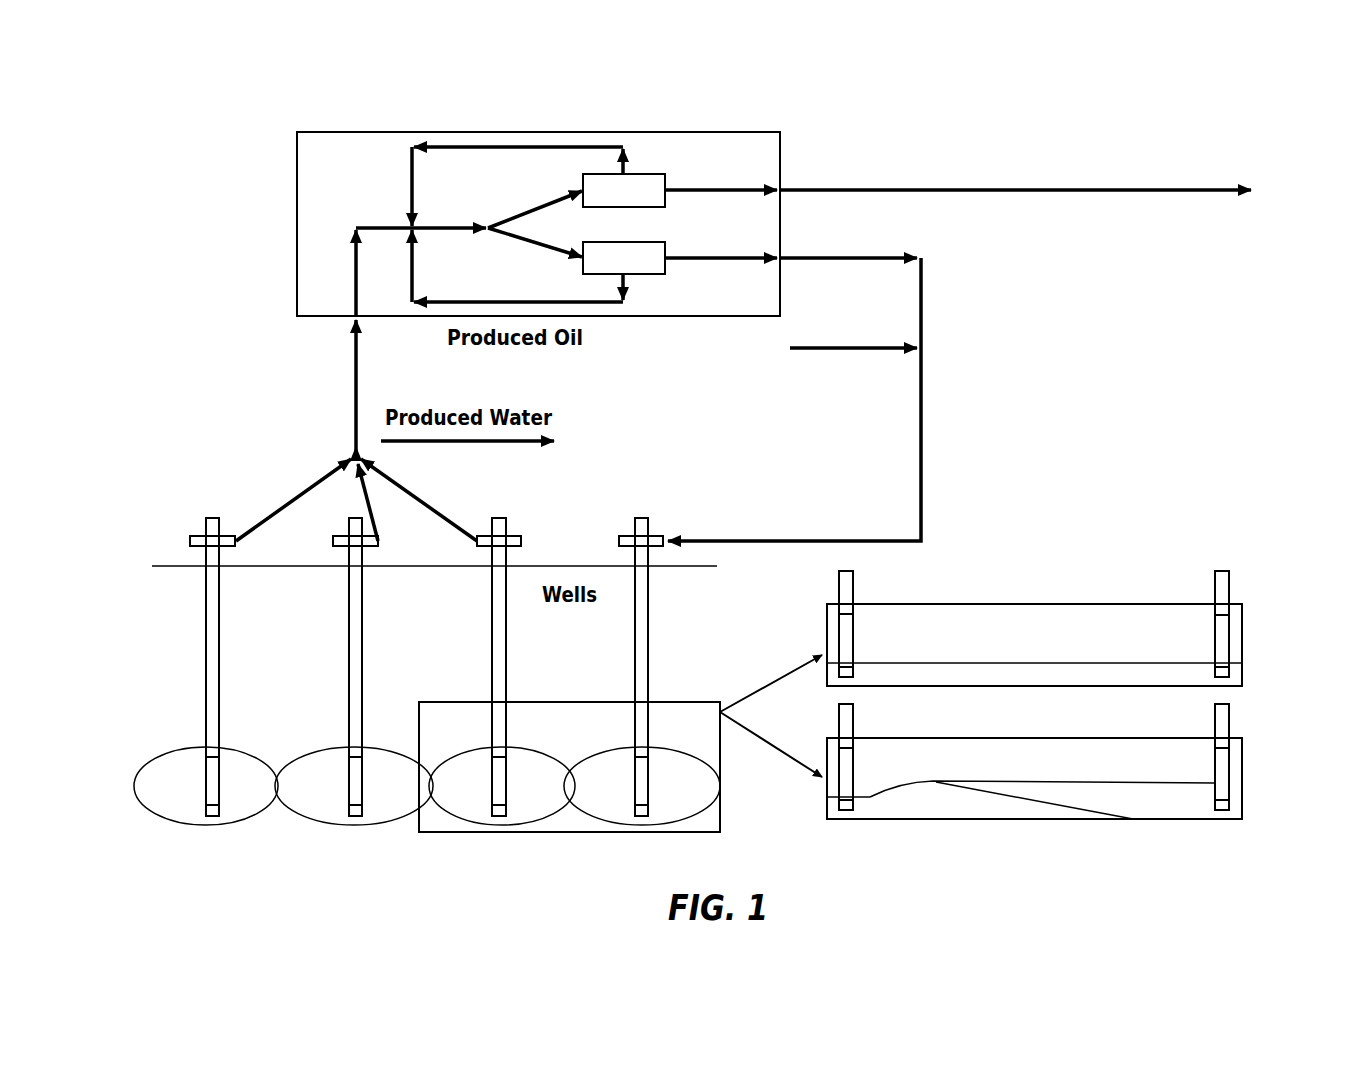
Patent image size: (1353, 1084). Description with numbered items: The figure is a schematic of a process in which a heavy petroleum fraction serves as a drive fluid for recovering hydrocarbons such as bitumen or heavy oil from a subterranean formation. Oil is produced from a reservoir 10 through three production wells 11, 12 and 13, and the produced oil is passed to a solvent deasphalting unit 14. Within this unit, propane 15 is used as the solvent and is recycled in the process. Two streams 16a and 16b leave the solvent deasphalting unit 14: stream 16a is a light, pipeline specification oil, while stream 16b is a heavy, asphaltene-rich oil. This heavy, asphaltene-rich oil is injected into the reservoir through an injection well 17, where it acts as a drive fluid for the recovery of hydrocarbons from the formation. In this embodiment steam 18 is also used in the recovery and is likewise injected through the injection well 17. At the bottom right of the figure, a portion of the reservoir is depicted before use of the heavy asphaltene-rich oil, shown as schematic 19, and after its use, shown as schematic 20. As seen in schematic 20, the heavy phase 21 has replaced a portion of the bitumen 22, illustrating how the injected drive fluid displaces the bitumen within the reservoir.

The reservoir 10 is at (402, 723).
The production well 11 is at (219, 633).
The production well 12 is at (362, 633).
The production well 13 is at (506, 633).
The solvent deasphalting unit 14 is at (297, 249).
The propane 15 is at (578, 150).
The stream 16a is at (838, 189).
The stream 16b is at (838, 256).
The injection well 17 is at (648, 633).
The steam 18 is at (833, 345).
The schematic 19 is at (1246, 639).
The schematic 20 is at (1246, 759).
The heavy phase 21 is at (1172, 812).
The bitumen 22 is at (1123, 677).